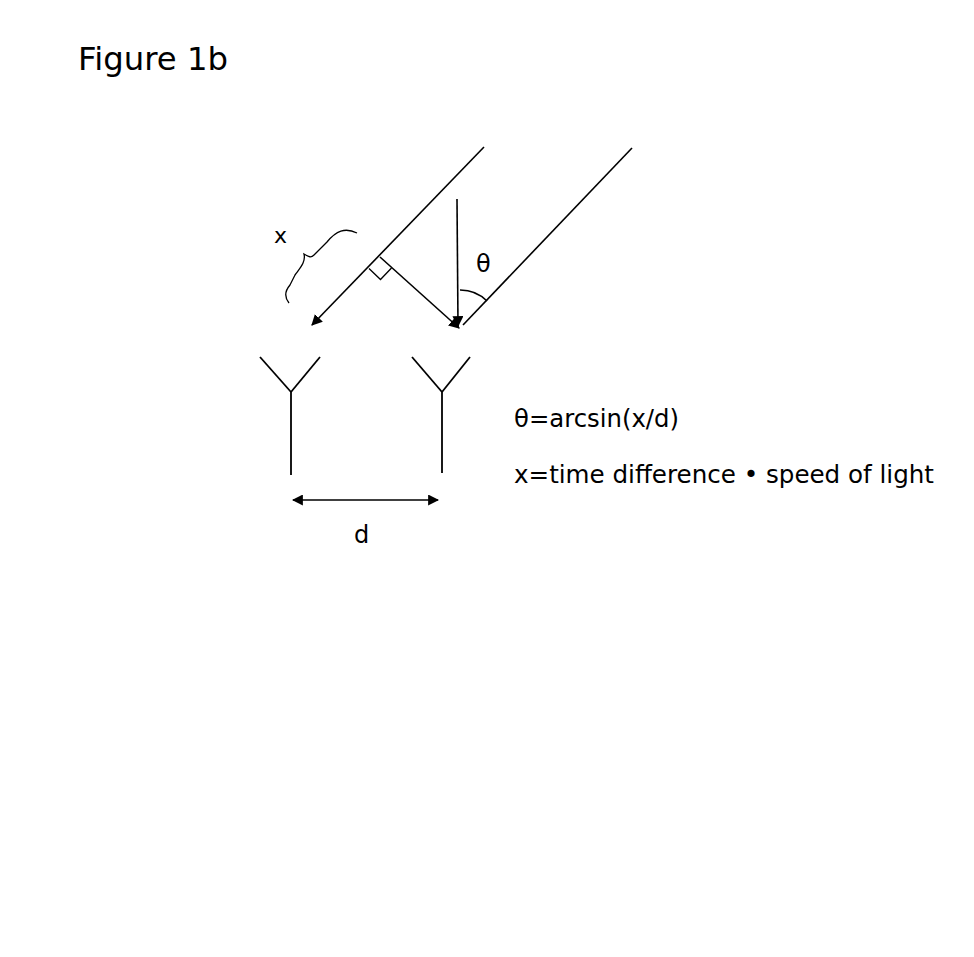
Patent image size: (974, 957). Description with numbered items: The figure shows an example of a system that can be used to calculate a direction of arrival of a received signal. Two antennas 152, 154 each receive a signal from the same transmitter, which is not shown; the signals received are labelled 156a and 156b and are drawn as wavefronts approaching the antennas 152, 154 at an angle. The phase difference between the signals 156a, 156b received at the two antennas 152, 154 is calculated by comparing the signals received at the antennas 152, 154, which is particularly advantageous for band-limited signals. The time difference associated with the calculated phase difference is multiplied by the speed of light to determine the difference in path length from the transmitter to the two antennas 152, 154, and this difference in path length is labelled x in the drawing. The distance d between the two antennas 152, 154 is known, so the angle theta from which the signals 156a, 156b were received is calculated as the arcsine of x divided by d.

The antenna 152 is at (291, 427).
The antenna 154 is at (444, 452).
The signal 156a is at (425, 207).
The signal 156b is at (590, 194).